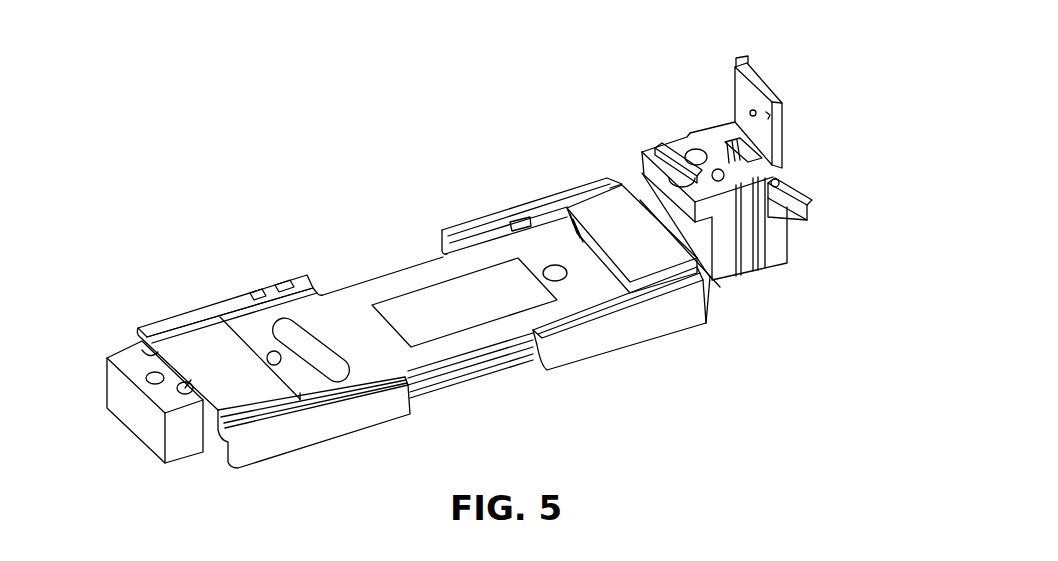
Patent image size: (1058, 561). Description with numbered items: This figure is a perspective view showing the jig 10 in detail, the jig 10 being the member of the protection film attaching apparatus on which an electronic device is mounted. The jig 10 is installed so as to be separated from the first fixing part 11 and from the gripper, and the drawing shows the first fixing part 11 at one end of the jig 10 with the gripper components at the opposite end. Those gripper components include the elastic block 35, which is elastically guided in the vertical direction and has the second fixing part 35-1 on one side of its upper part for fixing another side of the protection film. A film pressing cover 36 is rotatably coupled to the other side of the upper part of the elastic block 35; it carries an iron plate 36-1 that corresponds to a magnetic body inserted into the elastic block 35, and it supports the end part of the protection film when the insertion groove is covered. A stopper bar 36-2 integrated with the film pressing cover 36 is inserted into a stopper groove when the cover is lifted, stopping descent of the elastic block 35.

The jig 10 is at (358, 310).
The first fixing part 11 is at (145, 320).
The elastic block 35 is at (715, 283).
The second fixing part 35-1 is at (641, 152).
The film pressing cover 36 is at (783, 135).
The iron plate 36-1 is at (732, 103).
The stopper bar 36-2 is at (812, 208).